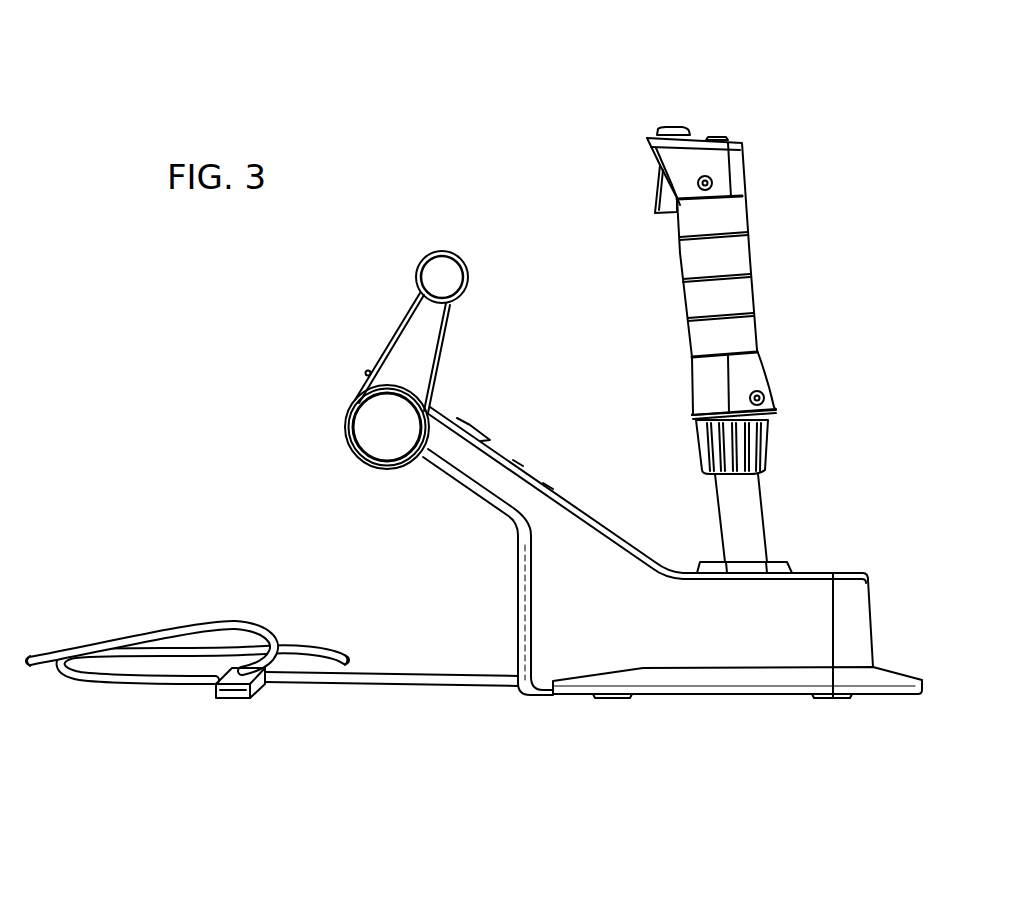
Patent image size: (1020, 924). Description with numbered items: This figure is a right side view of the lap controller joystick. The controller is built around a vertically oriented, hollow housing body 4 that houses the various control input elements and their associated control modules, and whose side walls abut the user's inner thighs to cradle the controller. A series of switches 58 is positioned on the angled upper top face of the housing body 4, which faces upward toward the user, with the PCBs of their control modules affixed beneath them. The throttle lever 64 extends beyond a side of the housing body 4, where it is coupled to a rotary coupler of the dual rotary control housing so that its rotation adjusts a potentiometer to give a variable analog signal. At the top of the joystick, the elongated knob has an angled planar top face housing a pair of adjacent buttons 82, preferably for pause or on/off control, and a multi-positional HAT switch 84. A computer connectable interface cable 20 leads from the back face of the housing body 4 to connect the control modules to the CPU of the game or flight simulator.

The housing body 4 is at (808, 597).
The interface cable 20 is at (410, 677).
The switches 58 is at (457, 418).
The throttle lever 64 is at (443, 270).
The buttons 82 is at (717, 136).
The HAT switch 84 is at (684, 126).